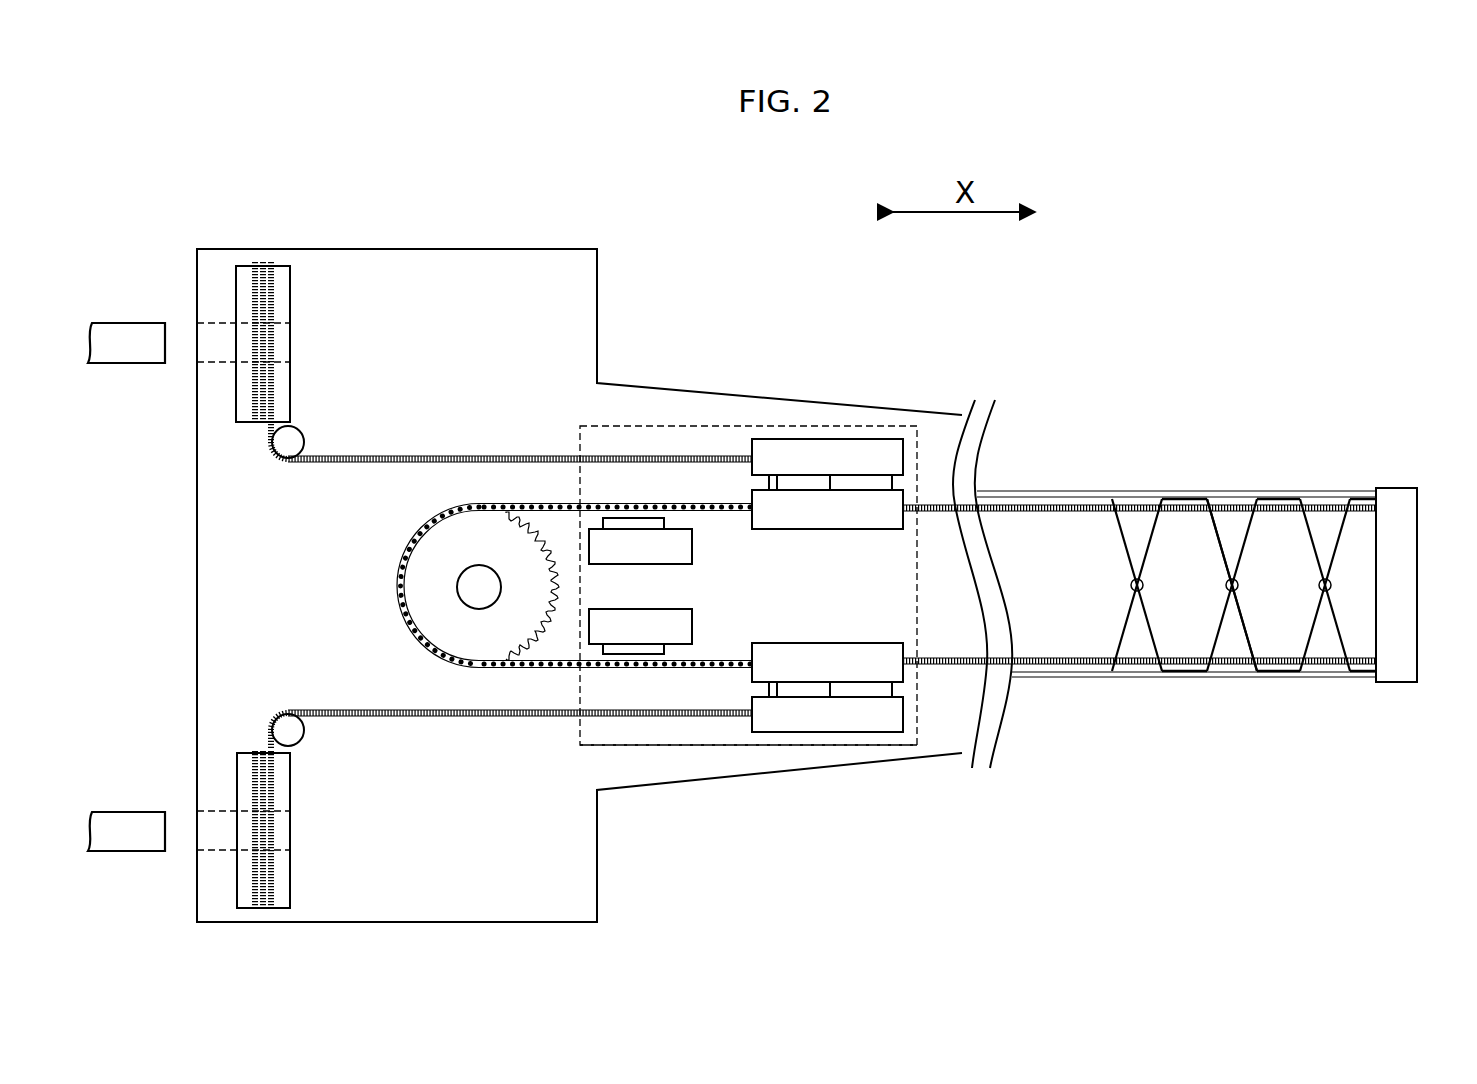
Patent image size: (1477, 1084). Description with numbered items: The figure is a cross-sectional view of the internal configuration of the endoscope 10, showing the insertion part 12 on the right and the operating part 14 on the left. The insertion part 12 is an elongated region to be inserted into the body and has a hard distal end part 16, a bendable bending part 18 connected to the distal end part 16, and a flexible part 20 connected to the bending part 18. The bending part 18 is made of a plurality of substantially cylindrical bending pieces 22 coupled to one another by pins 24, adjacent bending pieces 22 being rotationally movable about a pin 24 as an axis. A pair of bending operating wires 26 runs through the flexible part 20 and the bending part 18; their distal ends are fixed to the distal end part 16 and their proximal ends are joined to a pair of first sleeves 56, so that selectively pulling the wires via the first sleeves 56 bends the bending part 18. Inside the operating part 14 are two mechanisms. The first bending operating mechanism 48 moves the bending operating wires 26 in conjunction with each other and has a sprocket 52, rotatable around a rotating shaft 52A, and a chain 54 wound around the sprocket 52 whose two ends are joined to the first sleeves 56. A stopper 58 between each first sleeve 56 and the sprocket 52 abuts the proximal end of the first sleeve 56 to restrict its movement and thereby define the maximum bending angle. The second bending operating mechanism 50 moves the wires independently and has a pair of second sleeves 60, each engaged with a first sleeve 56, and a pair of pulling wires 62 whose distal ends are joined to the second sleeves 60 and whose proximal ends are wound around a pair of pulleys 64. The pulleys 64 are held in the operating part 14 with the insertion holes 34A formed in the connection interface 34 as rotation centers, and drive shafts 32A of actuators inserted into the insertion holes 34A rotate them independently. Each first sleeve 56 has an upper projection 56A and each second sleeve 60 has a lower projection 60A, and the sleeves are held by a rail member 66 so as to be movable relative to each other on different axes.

The endoscope 10 is at (1247, 235).
The insertion part 12 is at (1358, 333).
The operating part 14 is at (500, 197).
The distal end part 16 is at (1410, 523).
The bending part 18 is at (1244, 588).
The flexible part 20 is at (1028, 490).
The bending piece 22 is at (1257, 637).
The pin 24 is at (1232, 580).
The bending operating wire 26 is at (937, 505).
The drive shaft 32A is at (125, 333).
The connection interface 34 is at (197, 249).
The insertion hole 34A is at (217, 358).
The first bending operating mechanism 48 is at (526, 588).
The second bending operating mechanism 50 is at (695, 414).
The sprocket 52 is at (520, 510).
The rotating shaft 52A is at (466, 593).
The chain 54 is at (545, 667).
The first sleeve 56 is at (822, 526).
The upper projection 56A is at (775, 484).
The stopper 58 is at (688, 546).
The second sleeve 60 is at (800, 448).
The lower projection 60A is at (862, 482).
The pulling wire 62 is at (430, 456).
The pulley 64 is at (284, 292).
The rail member 66 is at (656, 740).